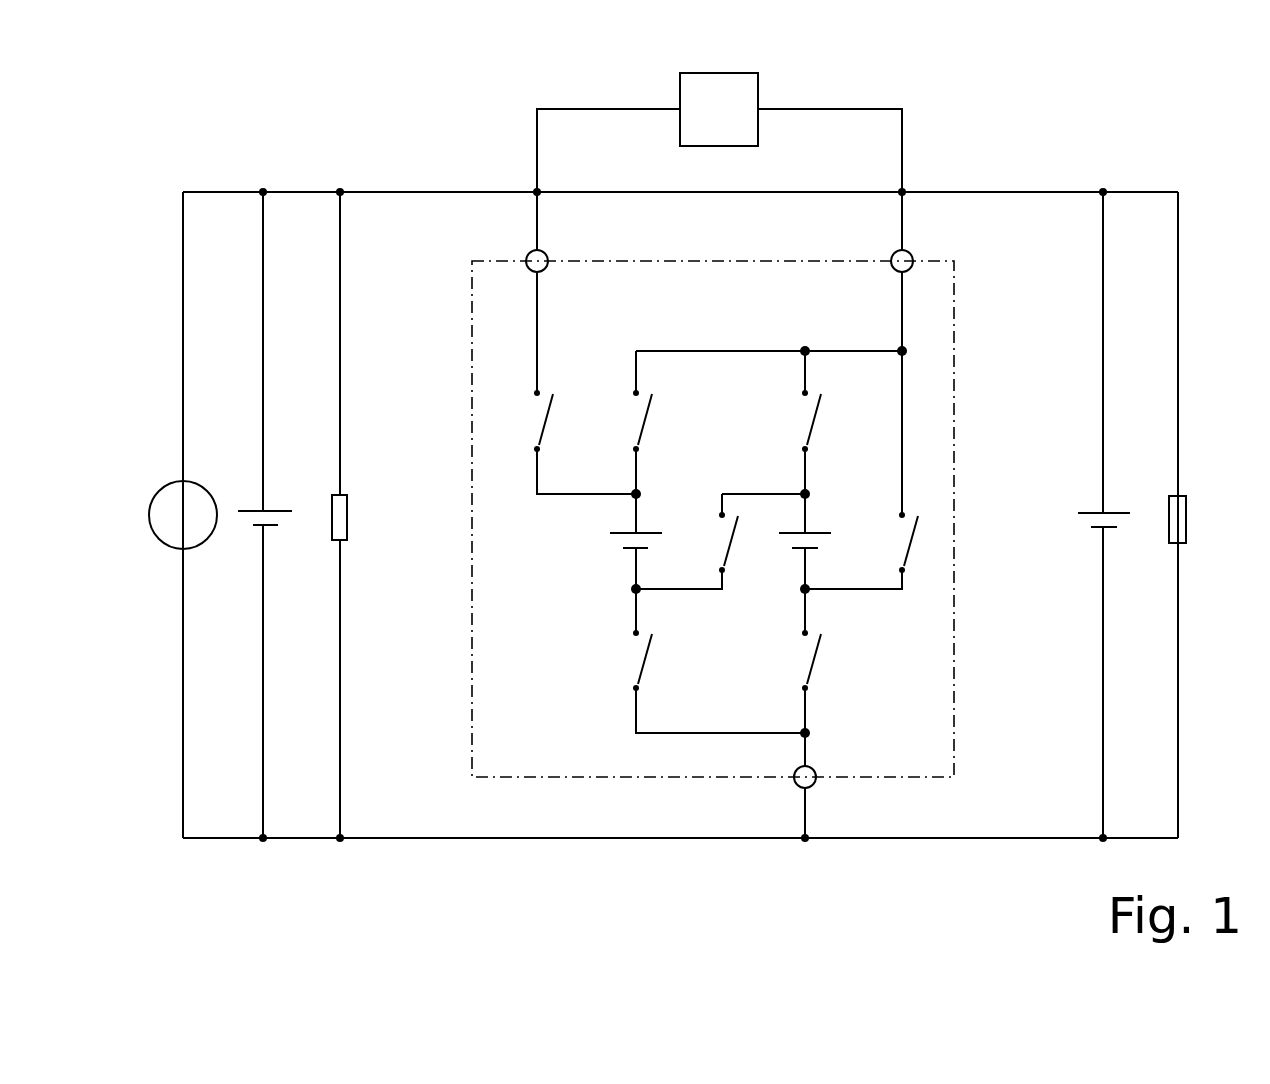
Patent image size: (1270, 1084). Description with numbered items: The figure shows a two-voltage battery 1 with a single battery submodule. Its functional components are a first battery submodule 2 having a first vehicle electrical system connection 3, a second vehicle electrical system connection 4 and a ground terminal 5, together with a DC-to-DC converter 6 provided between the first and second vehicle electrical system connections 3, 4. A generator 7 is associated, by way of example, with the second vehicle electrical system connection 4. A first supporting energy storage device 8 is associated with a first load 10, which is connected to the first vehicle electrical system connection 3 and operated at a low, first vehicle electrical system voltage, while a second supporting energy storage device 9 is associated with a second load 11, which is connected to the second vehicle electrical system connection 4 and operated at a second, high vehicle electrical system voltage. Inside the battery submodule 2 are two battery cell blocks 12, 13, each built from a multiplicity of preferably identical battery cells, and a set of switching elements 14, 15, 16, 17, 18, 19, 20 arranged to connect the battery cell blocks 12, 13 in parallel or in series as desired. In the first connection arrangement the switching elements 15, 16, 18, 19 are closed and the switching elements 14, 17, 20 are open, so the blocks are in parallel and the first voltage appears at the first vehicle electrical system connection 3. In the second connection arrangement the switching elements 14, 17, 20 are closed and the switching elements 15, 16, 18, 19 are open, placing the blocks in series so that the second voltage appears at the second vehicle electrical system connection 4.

The two-voltage battery 1 is at (994, 140).
The first battery submodule 2 is at (657, 256).
The first vehicle electrical system connection 3 is at (896, 256).
The second vehicle electrical system connection 4 is at (545, 266).
The ground terminal 5 is at (800, 785).
The DC-to-DC converter 6 is at (719, 132).
The generator 7 is at (183, 515).
The first supporting energy storage device 8 is at (1079, 501).
The second supporting energy storage device 9 is at (283, 497).
The first load 10 is at (1186, 518).
The second load 11 is at (346, 517).
The battery cell block 12 is at (813, 528).
The battery cell block 13 is at (604, 549).
The switching element 14 is at (921, 575).
The switching element 15 is at (792, 427).
The switching element 16 is at (822, 662).
The switching element 17 is at (742, 586).
The switching element 18 is at (628, 425).
The switching element 19 is at (630, 656).
The switching element 20 is at (530, 424).